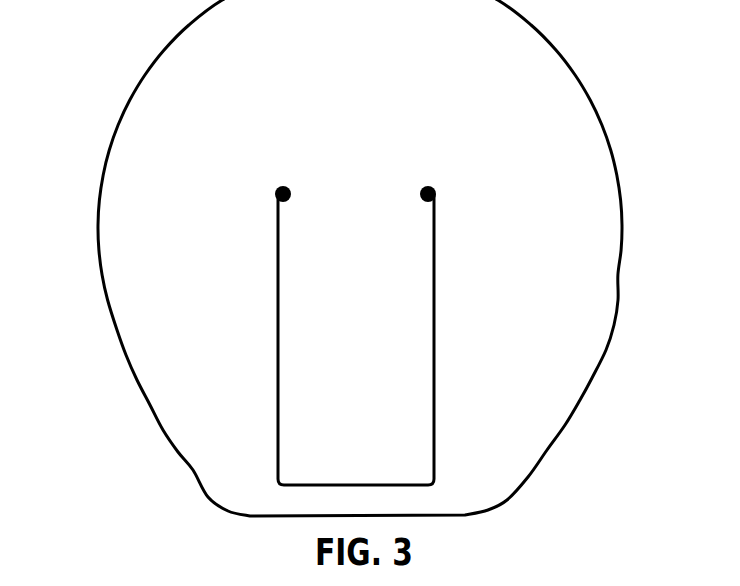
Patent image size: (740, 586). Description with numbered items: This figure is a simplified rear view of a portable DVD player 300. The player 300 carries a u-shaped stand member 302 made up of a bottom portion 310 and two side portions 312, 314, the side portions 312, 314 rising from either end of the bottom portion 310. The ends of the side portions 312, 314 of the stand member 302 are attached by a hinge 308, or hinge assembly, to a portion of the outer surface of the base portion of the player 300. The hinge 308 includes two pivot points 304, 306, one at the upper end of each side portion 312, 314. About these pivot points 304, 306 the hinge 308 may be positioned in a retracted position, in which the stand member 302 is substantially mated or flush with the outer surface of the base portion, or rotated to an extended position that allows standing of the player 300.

The portable DVD player 300 is at (85, 28).
The u-shaped stand member 302 is at (382, 339).
The pivot point 304 is at (292, 192).
The pivot point 306 is at (440, 193).
The hinge 308 is at (266, 164).
The bottom portion 310 is at (350, 485).
The side portion 312 is at (436, 380).
The side portion 314 is at (276, 415).